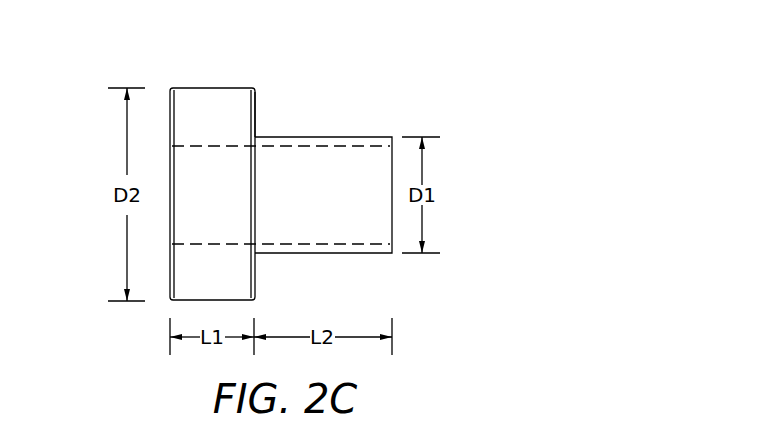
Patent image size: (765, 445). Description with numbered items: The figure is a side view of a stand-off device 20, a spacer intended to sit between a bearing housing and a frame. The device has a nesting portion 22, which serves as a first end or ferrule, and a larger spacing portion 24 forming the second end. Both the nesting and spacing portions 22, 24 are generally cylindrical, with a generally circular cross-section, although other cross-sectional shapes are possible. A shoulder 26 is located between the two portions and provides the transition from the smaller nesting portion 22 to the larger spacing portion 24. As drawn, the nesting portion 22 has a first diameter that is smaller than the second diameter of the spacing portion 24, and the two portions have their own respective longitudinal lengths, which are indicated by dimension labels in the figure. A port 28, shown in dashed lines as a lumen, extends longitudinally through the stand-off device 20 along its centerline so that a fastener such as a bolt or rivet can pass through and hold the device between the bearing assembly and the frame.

The stand-off device 20 is at (468, 68).
The nesting portion 22 is at (337, 115).
The spacing portion 24 is at (188, 78).
The shoulder 26 is at (257, 110).
The port 28 is at (355, 185).